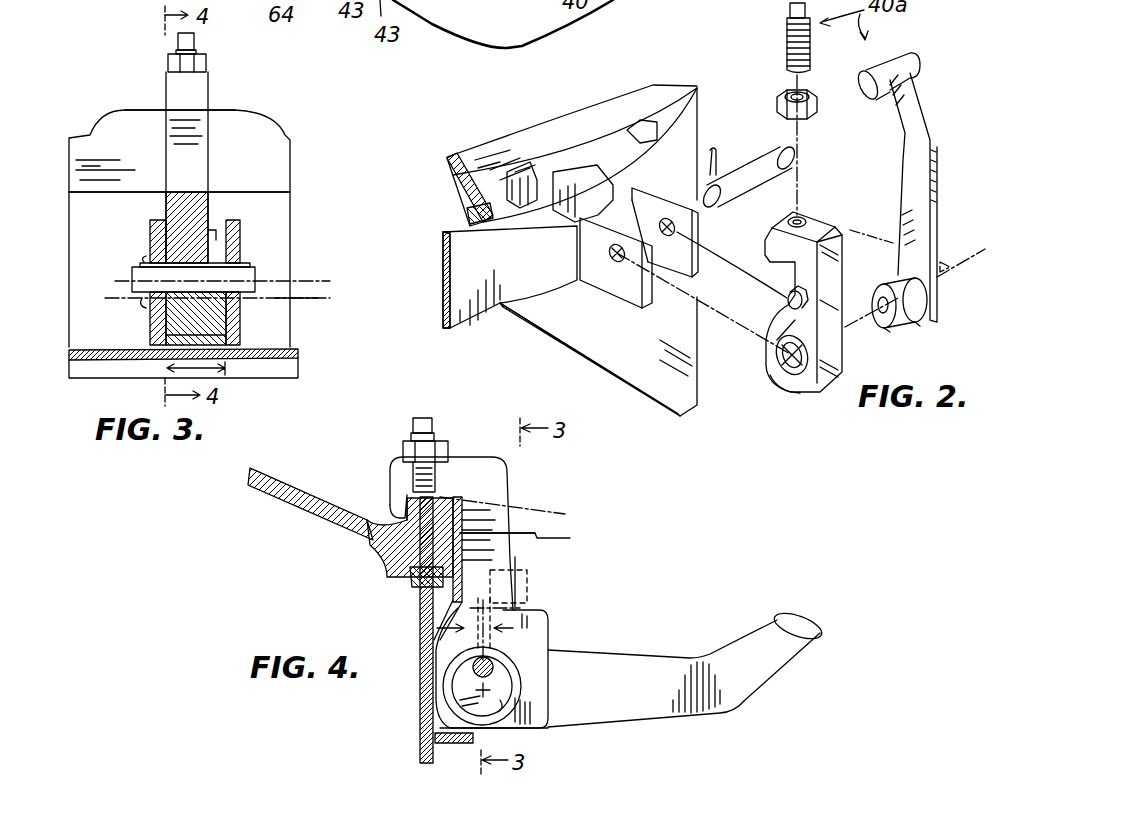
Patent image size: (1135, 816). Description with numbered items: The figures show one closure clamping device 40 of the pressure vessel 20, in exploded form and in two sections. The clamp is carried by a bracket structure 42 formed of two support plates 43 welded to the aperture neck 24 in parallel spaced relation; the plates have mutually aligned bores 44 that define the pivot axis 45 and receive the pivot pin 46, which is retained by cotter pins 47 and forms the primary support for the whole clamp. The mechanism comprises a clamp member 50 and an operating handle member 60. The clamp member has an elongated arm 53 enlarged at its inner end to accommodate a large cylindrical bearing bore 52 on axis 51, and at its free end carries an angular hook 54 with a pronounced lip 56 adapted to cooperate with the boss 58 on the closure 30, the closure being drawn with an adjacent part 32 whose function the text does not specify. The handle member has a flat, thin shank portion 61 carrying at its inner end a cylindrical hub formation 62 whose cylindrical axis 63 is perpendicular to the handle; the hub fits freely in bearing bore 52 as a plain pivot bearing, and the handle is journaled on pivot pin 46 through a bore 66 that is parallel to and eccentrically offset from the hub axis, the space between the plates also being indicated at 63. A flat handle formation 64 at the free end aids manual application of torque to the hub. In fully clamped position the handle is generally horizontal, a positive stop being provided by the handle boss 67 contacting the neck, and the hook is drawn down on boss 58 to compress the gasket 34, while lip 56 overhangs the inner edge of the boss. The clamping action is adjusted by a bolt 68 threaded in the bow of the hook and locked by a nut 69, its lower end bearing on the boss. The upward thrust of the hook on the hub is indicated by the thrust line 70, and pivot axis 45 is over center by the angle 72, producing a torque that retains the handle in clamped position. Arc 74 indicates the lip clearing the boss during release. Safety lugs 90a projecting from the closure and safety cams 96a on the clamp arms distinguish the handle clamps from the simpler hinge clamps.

In FIG. 3, the pressure vessel 20 is at (272, 378).
In FIG. 2, the pressure vessel 20 is at (590, 353).
In FIG. 4, the pressure vessel 20 is at (440, 745).
In FIG. 3, the neck 24 is at (298, 338).
In FIG. 2, the neck 24 is at (470, 283).
In FIG. 4, the neck 24 is at (428, 770).
In FIG. 2, the closure 30 is at (515, 143).
In FIG. 4, the closure 30 is at (372, 568).
In FIG. 3, the pad backing block 32 is at (282, 148).
In FIG. 2, the pad backing block 32 is at (480, 195).
In FIG. 2, the gasket 34 is at (470, 225).
In FIG. 4, the gasket 34 is at (405, 590).
In FIG. 3, the clamping device 40 is at (268, 186).
In FIG. 4, the clamping device 40 is at (663, 580).
In FIG. 2, the bracket structure 42 is at (630, 324).
In FIG. 3, the support plates 43 is at (150, 232).
In FIG. 2, the support plates 43 is at (690, 282).
In FIG. 3, the bores 44 is at (140, 270).
In FIG. 2, the bores 44 is at (617, 262).
In FIG. 3, the pivot axis 45 is at (296, 281).
In FIG. 2, the pivot axis 45 is at (590, 252).
In FIG. 4, the pivot axis 45 is at (548, 642).
In FIG. 3, the pivot pin 46 is at (262, 263).
In FIG. 2, the pivot pin 46 is at (788, 150).
In FIG. 4, the pivot pin 46 is at (470, 700).
In FIG. 3, the cotter pins 47 is at (244, 305).
In FIG. 2, the cotter pins 47 is at (718, 145).
In FIG. 3, the clamp member 50 is at (224, 141).
In FIG. 2, the clamp member 50 is at (837, 392).
In FIG. 4, the clamp member 50 is at (520, 560).
In FIG. 3, the axis 51 is at (305, 298).
In FIG. 2, the axis 51 is at (760, 372).
In FIG. 4, the axis 51 is at (505, 694).
In FIG. 3, the bearing bore 52 is at (160, 330).
In FIG. 2, the bearing bore 52 is at (790, 388).
In FIG. 4, the bearing bore 52 is at (553, 726).
In FIG. 2, the elongated arm 53 is at (840, 345).
In FIG. 4, the elongated arm 53 is at (520, 532).
In FIG. 2, the angular hook 54 is at (815, 222).
In FIG. 2, the lip 56 is at (787, 300).
In FIG. 4, the lip 56 is at (370, 528).
In FIG. 3, the boss 58 is at (268, 116).
In FIG. 2, the boss 58 is at (625, 130).
In FIG. 4, the boss 58 is at (392, 512).
In FIG. 3, the operating handle member 60 is at (221, 221).
In FIG. 2, the operating handle member 60 is at (944, 264).
In FIG. 4, the operating handle member 60 is at (668, 657).
In FIG. 2, the shank portion 61 is at (905, 172).
In FIG. 3, the hub formation 62 is at (175, 308).
In FIG. 2, the hub formation 62 is at (918, 303).
In FIG. 4, the hub formation 62 is at (563, 632).
In FIG. 3, the cylindrical axis 63 is at (165, 370).
In FIG. 2, the cylindrical axis 63 is at (943, 266).
In FIG. 2, the handle formation 64 is at (912, 60).
In FIG. 4, the handle formation 64 is at (805, 625).
In FIG. 2, the through bore 66 is at (885, 328).
In FIG. 4, the through bore 66 is at (468, 668).
In FIG. 2, the handle boss 67 is at (920, 322).
In FIG. 4, the handle boss 67 is at (437, 716).
In FIG. 3, the bolt 68 is at (176, 42).
In FIG. 2, the bolt 68 is at (788, 32).
In FIG. 4, the bolt 68 is at (428, 418).
In FIG. 3, the nut 69 is at (200, 64).
In FIG. 2, the nut 69 is at (810, 108).
In FIG. 4, the nut 69 is at (446, 445).
In FIG. 4, the thrust line 70 is at (453, 632).
In FIG. 4, the over-center angle 72 is at (515, 600).
In FIG. 4, the arc 74 is at (498, 500).
In FIG. 2, the safety lugs 90a is at (573, 180).
In FIG. 2, the safety cams 96a is at (777, 340).